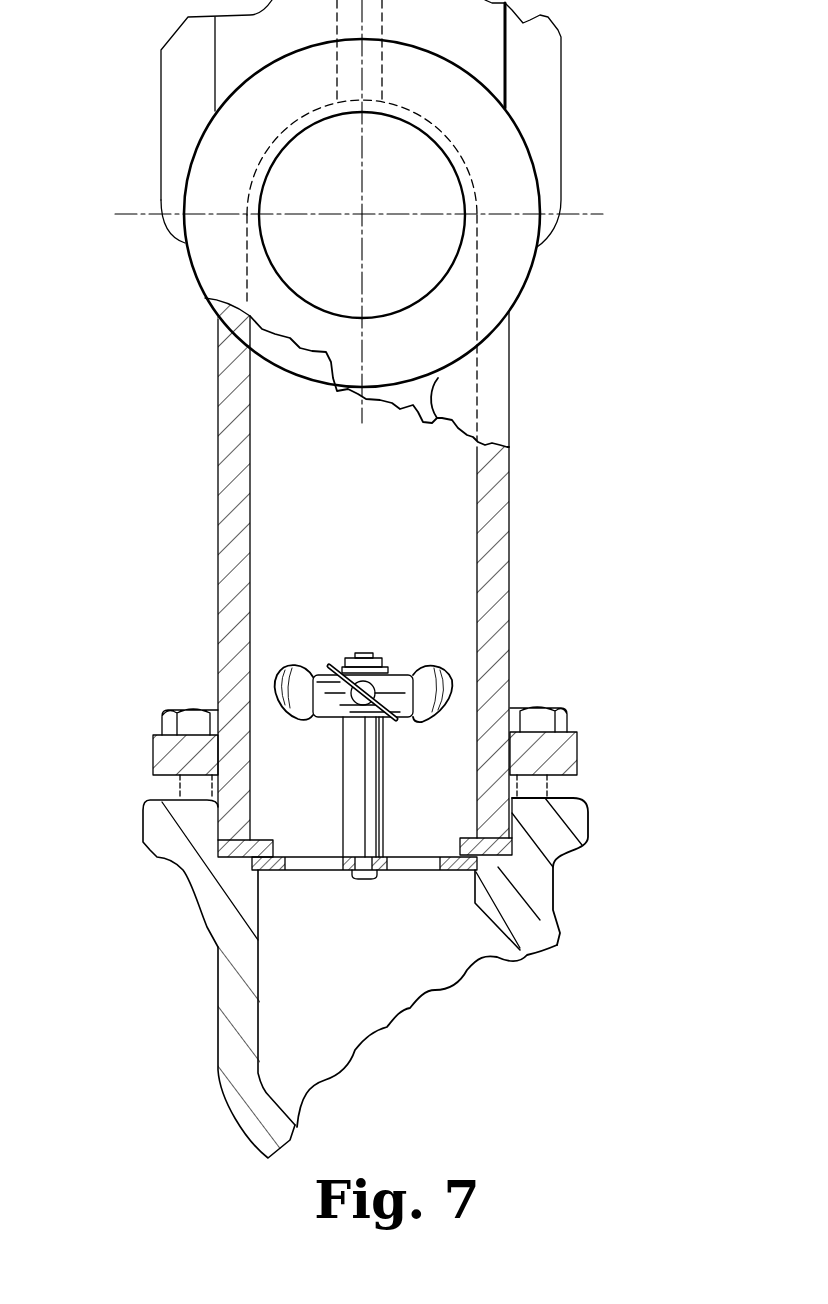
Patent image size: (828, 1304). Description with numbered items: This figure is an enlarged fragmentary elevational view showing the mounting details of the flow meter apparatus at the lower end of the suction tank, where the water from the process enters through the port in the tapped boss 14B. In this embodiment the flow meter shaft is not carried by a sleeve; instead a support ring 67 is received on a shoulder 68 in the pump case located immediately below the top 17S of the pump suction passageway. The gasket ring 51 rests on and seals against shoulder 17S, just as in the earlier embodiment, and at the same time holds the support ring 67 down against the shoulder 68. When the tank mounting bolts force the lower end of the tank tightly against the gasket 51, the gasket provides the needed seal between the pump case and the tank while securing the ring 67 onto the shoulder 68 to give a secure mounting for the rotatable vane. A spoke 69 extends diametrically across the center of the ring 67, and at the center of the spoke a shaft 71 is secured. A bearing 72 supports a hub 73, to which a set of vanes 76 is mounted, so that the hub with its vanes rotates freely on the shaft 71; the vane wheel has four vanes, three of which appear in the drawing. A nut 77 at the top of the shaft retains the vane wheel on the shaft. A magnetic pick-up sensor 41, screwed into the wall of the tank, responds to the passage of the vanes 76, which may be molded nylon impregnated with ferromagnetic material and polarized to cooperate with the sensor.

The tapped boss 14B is at (518, 190).
The top of the pump suction passageway 17S is at (250, 868).
The magnetic pick-up sensor 41 is at (379, 660).
The gasket ring 51 is at (262, 838).
The support ring 67 is at (199, 909).
The shoulder 68 is at (490, 890).
The spoke 69 is at (352, 873).
The shaft 71 is at (362, 879).
The bearing 72 is at (343, 832).
The hub 73 is at (400, 696).
The vanes 76 is at (428, 667).
The nut 77 is at (345, 661).